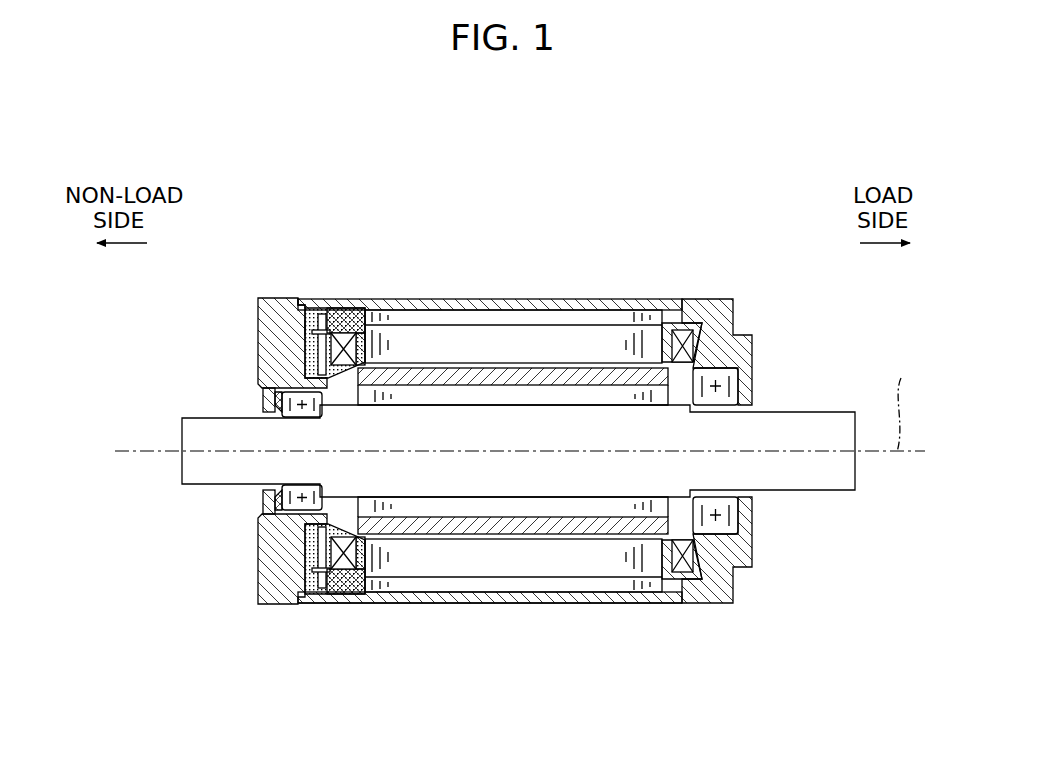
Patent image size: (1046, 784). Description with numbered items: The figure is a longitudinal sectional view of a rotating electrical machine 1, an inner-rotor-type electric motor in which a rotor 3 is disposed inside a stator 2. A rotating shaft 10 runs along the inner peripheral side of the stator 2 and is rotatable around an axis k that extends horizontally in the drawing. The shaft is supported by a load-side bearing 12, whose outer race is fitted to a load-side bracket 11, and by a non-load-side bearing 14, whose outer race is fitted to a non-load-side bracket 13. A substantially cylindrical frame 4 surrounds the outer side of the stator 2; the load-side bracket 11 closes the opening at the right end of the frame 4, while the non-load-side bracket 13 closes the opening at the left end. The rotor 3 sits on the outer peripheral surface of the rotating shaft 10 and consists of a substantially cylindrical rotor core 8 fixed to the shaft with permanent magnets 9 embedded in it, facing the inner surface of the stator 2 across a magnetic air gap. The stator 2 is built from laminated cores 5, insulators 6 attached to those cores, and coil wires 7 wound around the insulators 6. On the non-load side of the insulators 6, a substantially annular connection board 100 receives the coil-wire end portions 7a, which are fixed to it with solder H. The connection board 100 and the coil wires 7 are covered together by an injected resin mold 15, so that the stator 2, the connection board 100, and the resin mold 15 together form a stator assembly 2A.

The rotating electrical machine 1 is at (583, 207).
The stator 2 is at (425, 300).
The stator assembly 2A is at (300, 300).
The rotor 3 is at (470, 548).
The frame 4 is at (400, 605).
The laminated core 5 is at (486, 332).
The insulator 6 is at (352, 310).
The coil wire 7 is at (375, 320).
The coil-wire end portion 7a is at (318, 312).
The rotor core 8 is at (580, 502).
The permanent magnet 9 is at (530, 522).
The rotating shaft 10 is at (852, 410).
The load-side bracket 11 is at (745, 600).
The load-side bearing 12 is at (728, 507).
The non-load-side bracket 13 is at (264, 605).
The non-load-side bearing 14 is at (278, 497).
The resin mold 15 is at (305, 306).
The connection board 100 is at (318, 352).
The solder H is at (302, 327).
The axis k is at (900, 401).